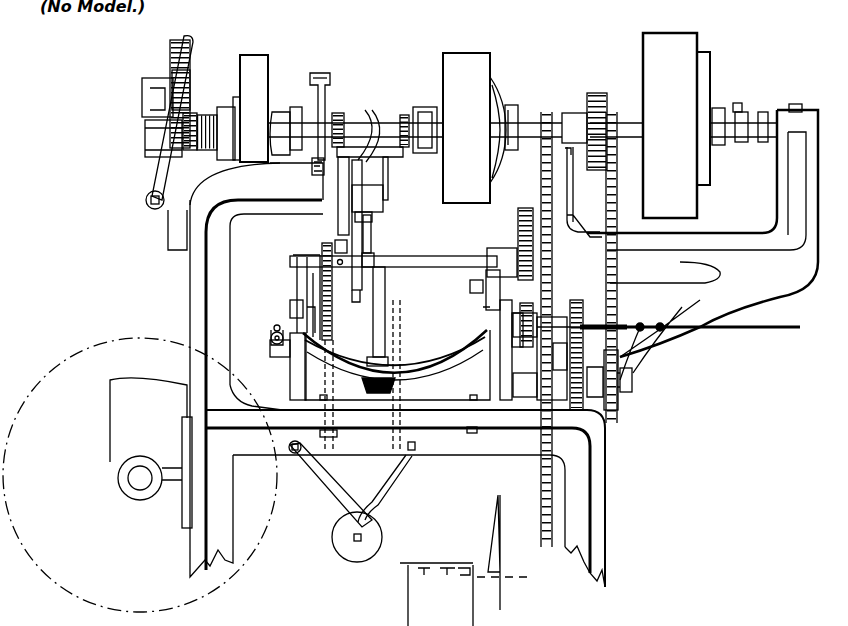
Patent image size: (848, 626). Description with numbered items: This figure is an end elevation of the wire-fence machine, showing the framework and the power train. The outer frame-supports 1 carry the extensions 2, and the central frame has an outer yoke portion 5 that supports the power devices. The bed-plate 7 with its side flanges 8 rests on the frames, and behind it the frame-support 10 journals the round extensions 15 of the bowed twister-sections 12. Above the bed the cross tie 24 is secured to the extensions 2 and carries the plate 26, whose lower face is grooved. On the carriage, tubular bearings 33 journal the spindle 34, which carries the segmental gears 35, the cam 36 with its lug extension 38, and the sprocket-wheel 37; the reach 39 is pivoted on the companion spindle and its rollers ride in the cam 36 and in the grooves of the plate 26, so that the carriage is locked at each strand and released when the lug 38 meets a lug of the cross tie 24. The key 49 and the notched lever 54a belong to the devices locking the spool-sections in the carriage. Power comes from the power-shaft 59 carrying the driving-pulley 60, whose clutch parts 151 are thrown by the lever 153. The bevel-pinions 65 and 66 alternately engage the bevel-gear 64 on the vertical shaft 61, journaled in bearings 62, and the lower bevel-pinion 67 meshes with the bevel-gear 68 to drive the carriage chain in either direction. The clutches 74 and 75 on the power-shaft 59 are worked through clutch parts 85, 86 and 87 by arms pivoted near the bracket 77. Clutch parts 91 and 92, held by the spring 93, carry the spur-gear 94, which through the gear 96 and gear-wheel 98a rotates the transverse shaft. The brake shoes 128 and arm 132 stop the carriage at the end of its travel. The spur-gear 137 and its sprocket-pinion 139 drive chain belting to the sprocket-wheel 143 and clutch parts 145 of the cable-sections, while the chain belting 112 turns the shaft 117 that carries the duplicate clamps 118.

The outer frame-support 1 is at (346, 501).
The extension 2 is at (386, 375).
The outer yoke portion 5 is at (702, 245).
The bed-plate 7 is at (397, 353).
The side flange 8 is at (303, 380).
The frame-support 10 is at (553, 402).
The twister-section 12 is at (436, 350).
The round extension 15 is at (520, 322).
The cross tie 24 is at (340, 196).
The frame or plate 26 is at (372, 225).
The tubular bearing 33 is at (502, 262).
The spindle 34 is at (442, 256).
The segmental gear 35 is at (518, 228).
The cam 36 is at (356, 300).
The sprocket-wheel 37 is at (322, 250).
The lug extension 38 is at (350, 248).
The reach 39 is at (373, 262).
The key 49 is at (292, 312).
The lever 54a is at (470, 285).
The power-shaft 59 is at (617, 122).
The driving-pulley 60 is at (676, 125).
The vertical shaft 61 is at (386, 318).
The bearing 62 is at (376, 205).
The bevel-gear 64 is at (392, 158).
The bevel-pinion 65 is at (404, 114).
The bevel-pinion 66 is at (339, 114).
The bevel-pinion 67 is at (370, 358).
The bevel-gear 68 is at (412, 430).
The clutch 74 is at (254, 64).
The clutch 75 is at (474, 62).
The bracket 77 is at (142, 88).
The clutch part 85 is at (295, 108).
The clutch part 86 is at (426, 120).
The clutch part 87 is at (512, 108).
The clutch part 91 is at (222, 108).
The clutch part 92 is at (180, 150).
The spring 93 is at (235, 183).
The spur-gear 94 is at (196, 114).
The gear 96 is at (180, 74).
The gear-wheel 98a is at (180, 42).
The chain belting 112 is at (522, 486).
The shaft 117 is at (140, 478).
The clamp 118 is at (140, 475).
The brake shoe 128 is at (312, 166).
The arm 132 is at (322, 74).
The spur-gear 137 is at (588, 108).
The sprocket-pinion 139 is at (614, 142).
The sprocket-wheel 143 is at (618, 406).
The clutch part 145 is at (633, 378).
The clutch part 151 is at (728, 110).
The lever 153 is at (165, 142).